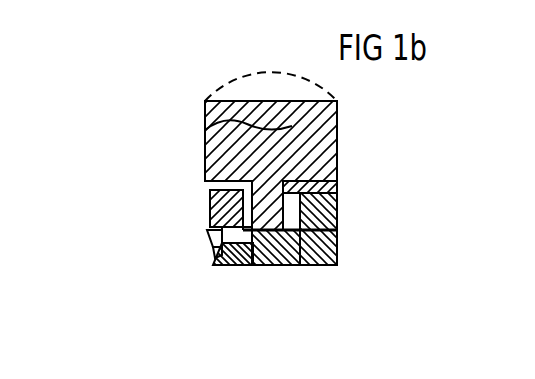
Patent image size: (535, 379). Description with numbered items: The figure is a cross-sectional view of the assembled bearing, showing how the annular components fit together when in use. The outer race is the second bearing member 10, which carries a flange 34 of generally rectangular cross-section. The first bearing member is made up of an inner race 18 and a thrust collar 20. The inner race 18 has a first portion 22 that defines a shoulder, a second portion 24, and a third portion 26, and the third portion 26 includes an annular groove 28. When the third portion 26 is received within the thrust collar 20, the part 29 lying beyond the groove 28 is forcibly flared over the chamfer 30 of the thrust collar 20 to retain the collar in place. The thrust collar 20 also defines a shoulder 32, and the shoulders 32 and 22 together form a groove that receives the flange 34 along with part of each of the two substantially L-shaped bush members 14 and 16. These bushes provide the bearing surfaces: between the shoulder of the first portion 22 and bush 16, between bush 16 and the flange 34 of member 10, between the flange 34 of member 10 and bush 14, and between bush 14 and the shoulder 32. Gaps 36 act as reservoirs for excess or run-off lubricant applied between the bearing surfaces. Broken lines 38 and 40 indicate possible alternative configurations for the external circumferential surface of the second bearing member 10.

The second bearing member 10 is at (338, 106).
The bush member 14 is at (207, 184).
The bush member 16 is at (338, 176).
The inner race 18 is at (338, 248).
The thrust collar 20 is at (210, 210).
The first portion 22 is at (338, 208).
The second portion 24 is at (290, 264).
The third portion 26 is at (231, 264).
The annular groove 28 is at (217, 264).
The part beyond groove 29 is at (210, 254).
The chamfer 30 is at (207, 232).
The shoulder 32 is at (210, 200).
The flange 34 is at (305, 250).
The gaps 36 is at (258, 264).
The broken line 38 is at (245, 78).
The broken line 40 is at (206, 125).